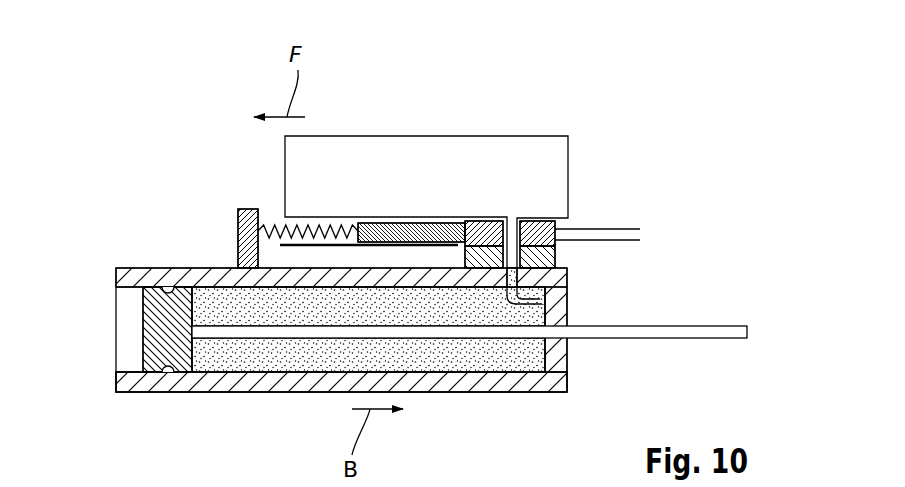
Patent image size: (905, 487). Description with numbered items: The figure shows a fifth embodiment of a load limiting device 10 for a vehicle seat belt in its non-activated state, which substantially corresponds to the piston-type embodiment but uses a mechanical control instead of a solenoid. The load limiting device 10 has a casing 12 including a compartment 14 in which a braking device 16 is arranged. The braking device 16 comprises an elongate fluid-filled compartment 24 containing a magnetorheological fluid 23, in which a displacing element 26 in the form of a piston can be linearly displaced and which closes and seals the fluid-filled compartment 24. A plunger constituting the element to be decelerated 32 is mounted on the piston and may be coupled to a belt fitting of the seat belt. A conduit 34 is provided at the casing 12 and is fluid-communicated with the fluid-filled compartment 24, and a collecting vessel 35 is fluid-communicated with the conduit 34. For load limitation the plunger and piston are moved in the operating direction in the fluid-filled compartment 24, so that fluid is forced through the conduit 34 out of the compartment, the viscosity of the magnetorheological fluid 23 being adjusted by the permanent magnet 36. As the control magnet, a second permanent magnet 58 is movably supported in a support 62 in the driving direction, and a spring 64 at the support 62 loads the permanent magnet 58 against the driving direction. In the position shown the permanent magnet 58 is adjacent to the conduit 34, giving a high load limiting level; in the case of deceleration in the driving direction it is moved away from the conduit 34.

The load limiting device 10 is at (622, 85).
The casing 12 is at (216, 382).
The compartment 14 is at (124, 312).
The braking device 16 is at (582, 212).
The magnetorheological fluid 23 is at (290, 360).
The fluid-filled compartment 24 is at (368, 398).
The displacing element 26 is at (160, 330).
The element to be decelerated 32 is at (710, 327).
The conduit 34 is at (545, 298).
The collecting vessel 35 is at (510, 136).
The permanent magnet 36 is at (557, 262).
The second permanent magnet 58 is at (403, 223).
The support 62 is at (303, 244).
The spring 64 is at (271, 223).